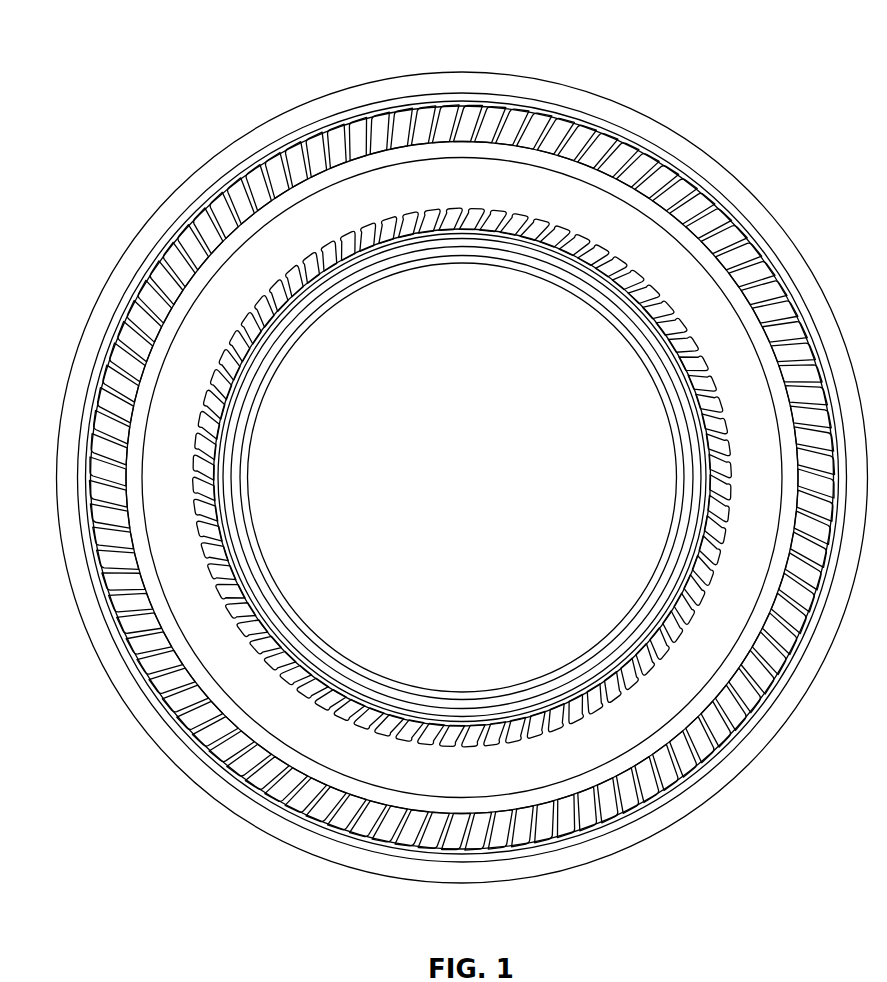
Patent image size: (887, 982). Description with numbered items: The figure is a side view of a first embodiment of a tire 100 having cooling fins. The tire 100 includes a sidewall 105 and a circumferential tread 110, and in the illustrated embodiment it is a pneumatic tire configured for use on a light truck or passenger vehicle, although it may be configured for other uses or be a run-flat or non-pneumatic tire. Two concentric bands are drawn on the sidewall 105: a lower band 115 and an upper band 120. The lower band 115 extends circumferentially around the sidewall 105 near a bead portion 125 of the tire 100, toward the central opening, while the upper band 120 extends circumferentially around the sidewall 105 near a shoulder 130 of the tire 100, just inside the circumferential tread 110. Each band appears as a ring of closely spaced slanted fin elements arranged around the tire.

The tire 100 is at (104, 50).
The sidewall 105 is at (185, 603).
The circumferential tread 110 is at (775, 170).
The lower band 115 is at (216, 510).
The upper band 120 is at (130, 329).
The bead portion 125 is at (359, 308).
The shoulder 130 is at (175, 214).